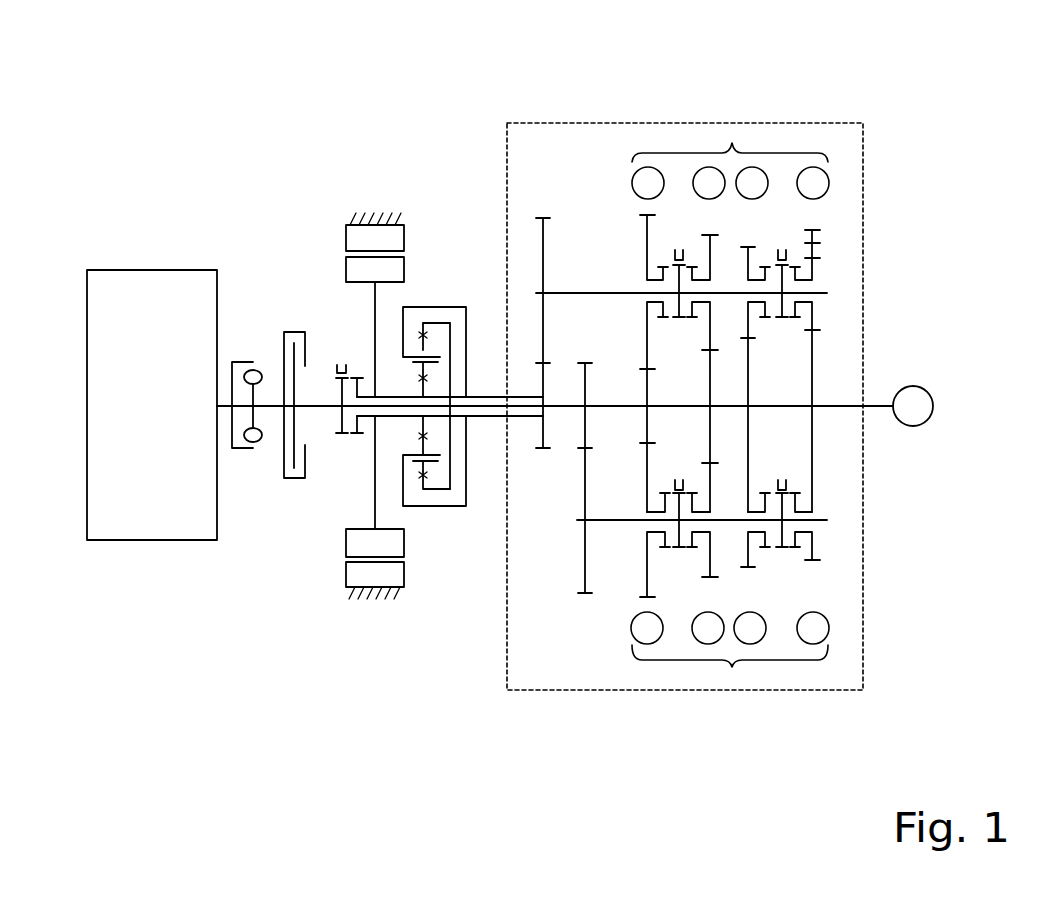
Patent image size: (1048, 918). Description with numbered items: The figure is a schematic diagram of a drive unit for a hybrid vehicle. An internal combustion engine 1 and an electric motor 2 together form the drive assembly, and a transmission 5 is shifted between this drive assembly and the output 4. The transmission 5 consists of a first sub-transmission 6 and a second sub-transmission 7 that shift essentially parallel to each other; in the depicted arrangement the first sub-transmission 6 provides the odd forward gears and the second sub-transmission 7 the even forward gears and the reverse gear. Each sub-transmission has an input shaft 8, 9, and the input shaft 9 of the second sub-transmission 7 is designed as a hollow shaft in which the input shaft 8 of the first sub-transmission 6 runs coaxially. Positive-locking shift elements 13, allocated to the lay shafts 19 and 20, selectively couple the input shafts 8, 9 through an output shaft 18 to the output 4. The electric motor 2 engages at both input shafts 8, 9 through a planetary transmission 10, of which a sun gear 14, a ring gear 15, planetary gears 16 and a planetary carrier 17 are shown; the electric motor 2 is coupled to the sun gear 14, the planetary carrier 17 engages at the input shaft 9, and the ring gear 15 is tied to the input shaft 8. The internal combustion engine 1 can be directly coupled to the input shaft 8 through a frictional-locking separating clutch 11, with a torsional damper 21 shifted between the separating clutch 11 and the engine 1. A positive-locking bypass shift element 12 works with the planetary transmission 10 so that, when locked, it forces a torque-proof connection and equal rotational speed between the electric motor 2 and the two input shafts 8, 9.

The internal combustion engine 1 is at (157, 515).
The electric motor 2 is at (383, 202).
The output 4 is at (933, 406).
The transmission 5 is at (863, 328).
The first sub-transmission 6 is at (732, 667).
The second sub-transmission 7 is at (732, 143).
The input shaft 8 is at (525, 413).
The input shaft 9 is at (483, 397).
The planetary transmission 10 is at (423, 538).
The separating clutch 11 is at (282, 486).
The bypass shift element 12 is at (338, 443).
The shift elements 13 is at (782, 240).
The sun gear 14 is at (418, 384).
The ring gear 15 is at (437, 323).
The planetary gears 16 is at (430, 467).
The planetary carrier 17 is at (403, 335).
The output shaft 18 is at (842, 407).
The lay shaft 19 is at (623, 522).
The lay shaft 20 is at (587, 293).
The torsional damper 21 is at (243, 353).